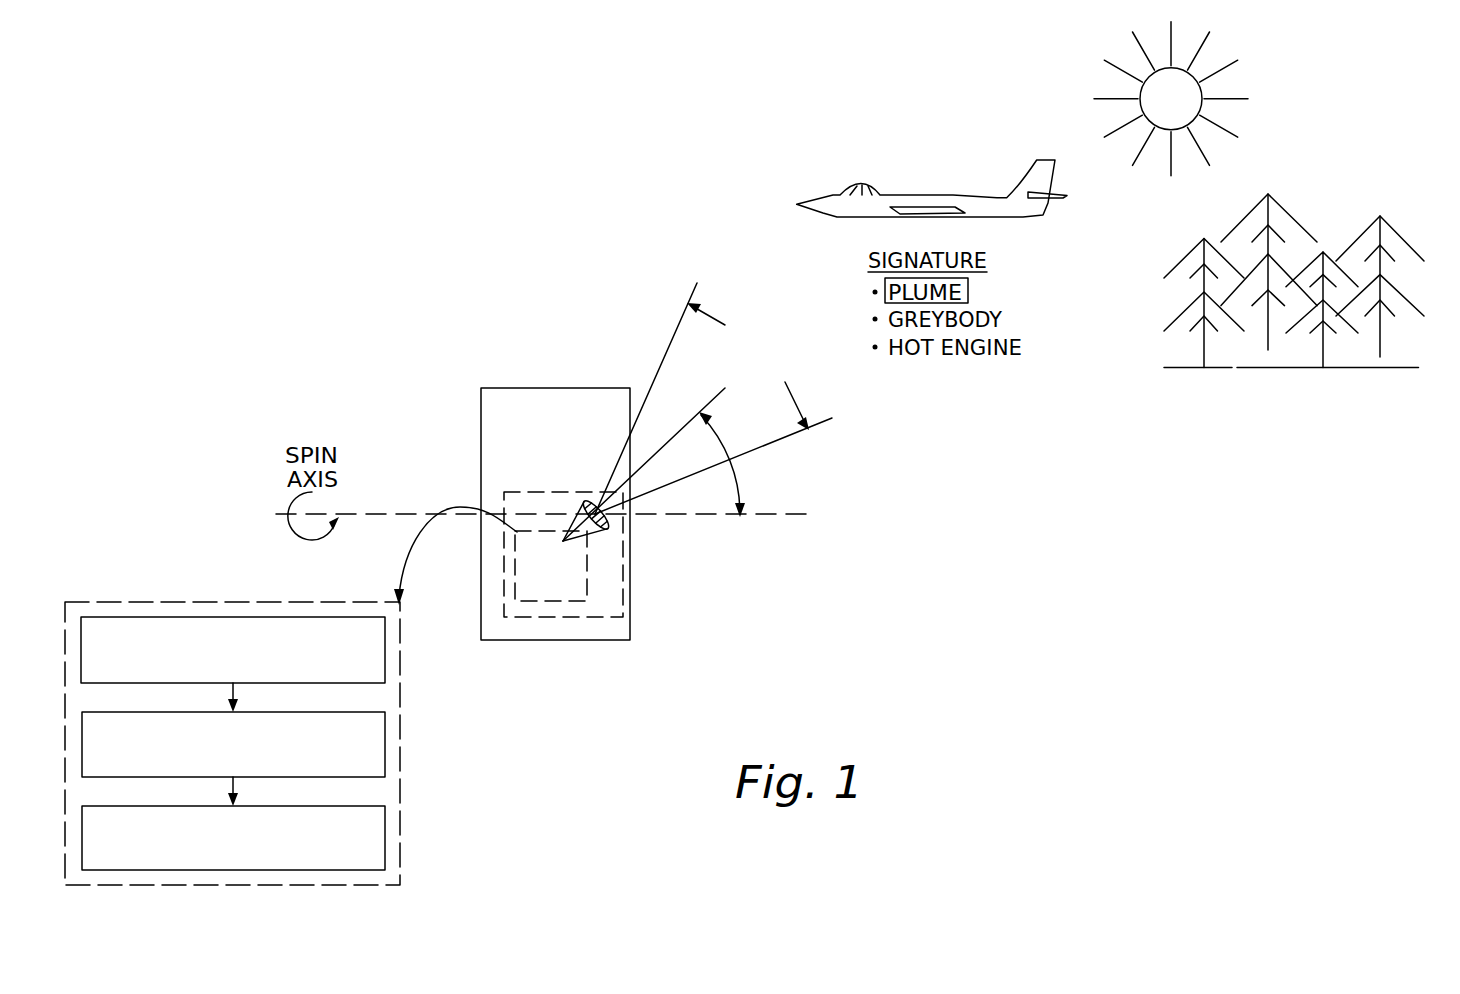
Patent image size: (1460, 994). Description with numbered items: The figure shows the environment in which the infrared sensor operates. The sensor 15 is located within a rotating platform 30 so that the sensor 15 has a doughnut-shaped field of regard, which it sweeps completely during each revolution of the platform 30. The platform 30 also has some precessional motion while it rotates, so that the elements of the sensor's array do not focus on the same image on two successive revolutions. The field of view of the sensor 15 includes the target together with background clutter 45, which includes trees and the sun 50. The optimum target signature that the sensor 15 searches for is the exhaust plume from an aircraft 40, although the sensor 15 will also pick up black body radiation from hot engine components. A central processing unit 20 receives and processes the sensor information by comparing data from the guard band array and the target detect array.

The sensor 15 is at (623, 595).
The central processing unit 20 is at (550, 583).
The platform 30 is at (543, 400).
The aircraft 40 is at (950, 197).
The background clutter 45 is at (1298, 218).
The sun 50 is at (1195, 67).